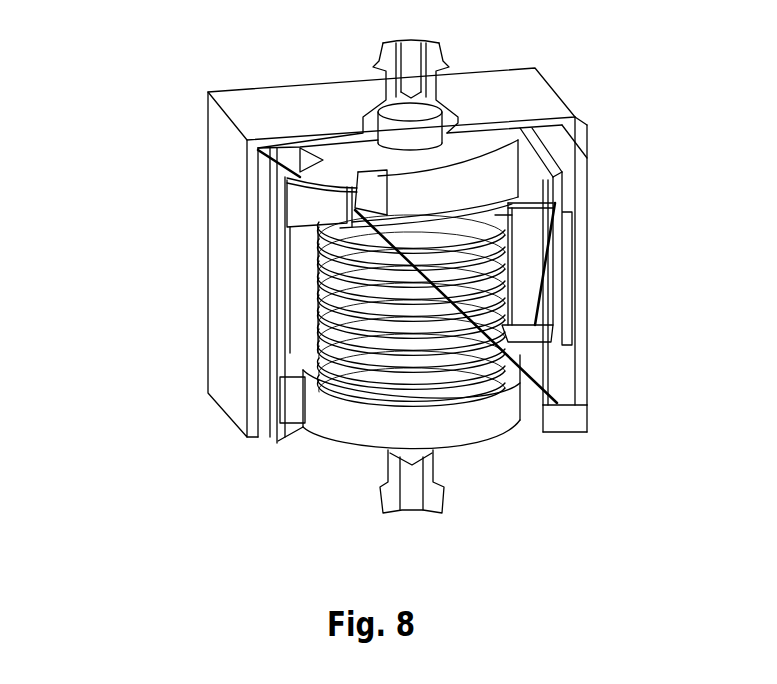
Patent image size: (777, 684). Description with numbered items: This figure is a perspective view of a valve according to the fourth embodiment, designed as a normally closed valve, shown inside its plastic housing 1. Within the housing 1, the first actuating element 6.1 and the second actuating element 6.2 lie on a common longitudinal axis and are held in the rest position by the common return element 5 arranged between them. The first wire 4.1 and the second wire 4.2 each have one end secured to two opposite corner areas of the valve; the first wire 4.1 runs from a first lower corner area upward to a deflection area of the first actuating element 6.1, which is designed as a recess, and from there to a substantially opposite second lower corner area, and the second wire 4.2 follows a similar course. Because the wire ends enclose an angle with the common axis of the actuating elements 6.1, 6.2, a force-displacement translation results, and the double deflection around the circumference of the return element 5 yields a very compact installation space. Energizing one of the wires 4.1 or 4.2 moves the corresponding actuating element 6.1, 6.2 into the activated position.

The housing 1 is at (208, 298).
The first actuating element 6.1 is at (258, 176).
The first wire 4.1 is at (290, 357).
The return element 5 is at (503, 248).
The second wire 4.2 is at (558, 288).
The second actuating element 6.2 is at (488, 412).